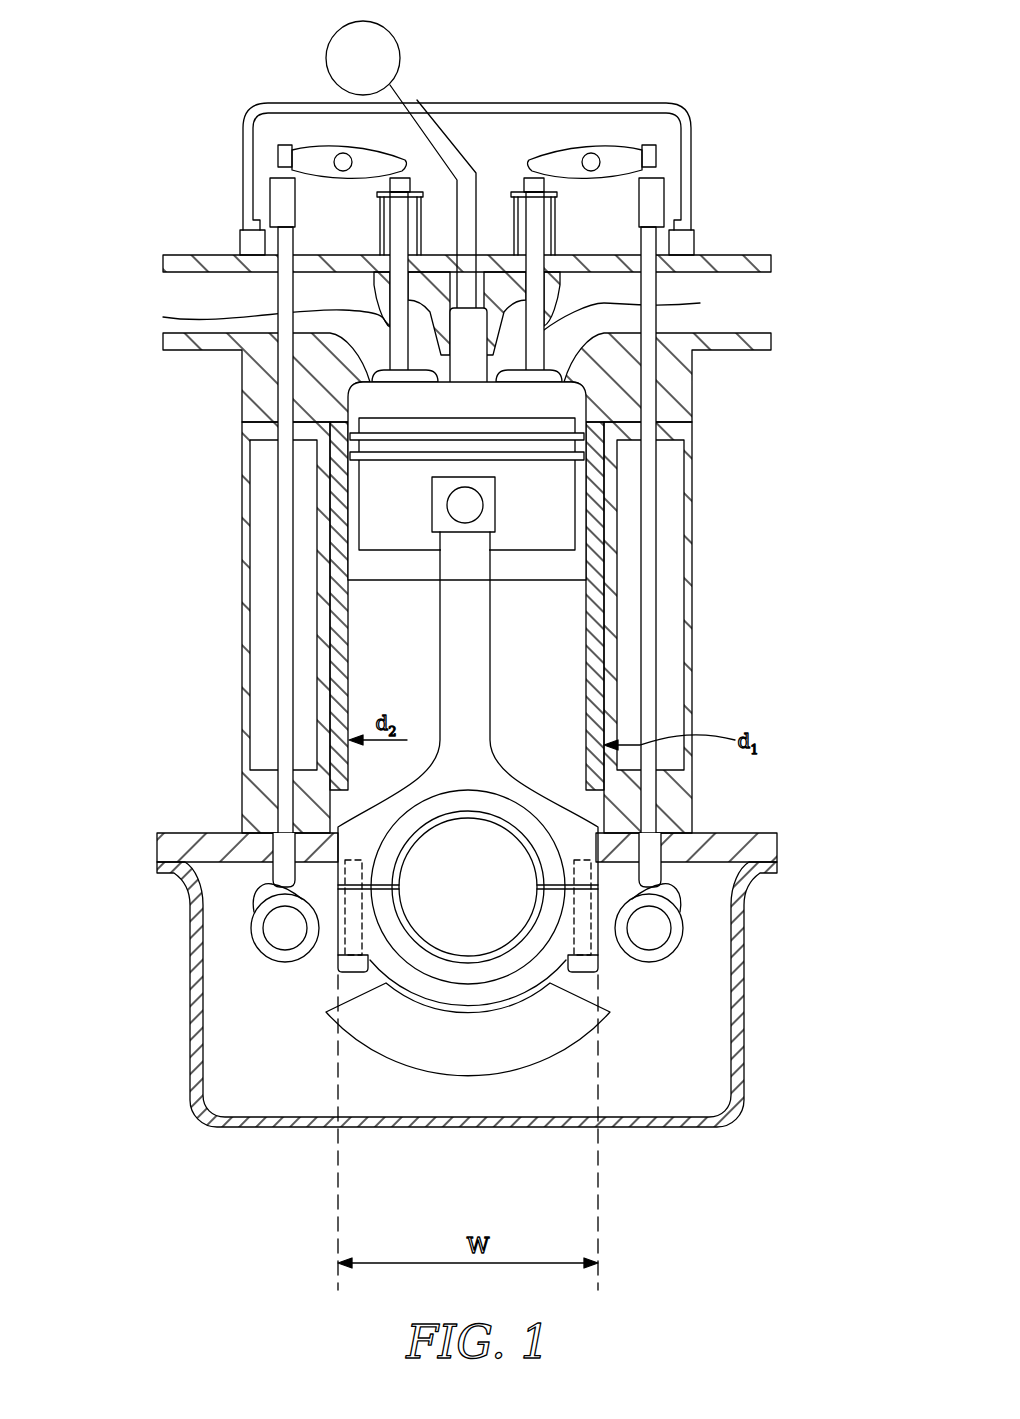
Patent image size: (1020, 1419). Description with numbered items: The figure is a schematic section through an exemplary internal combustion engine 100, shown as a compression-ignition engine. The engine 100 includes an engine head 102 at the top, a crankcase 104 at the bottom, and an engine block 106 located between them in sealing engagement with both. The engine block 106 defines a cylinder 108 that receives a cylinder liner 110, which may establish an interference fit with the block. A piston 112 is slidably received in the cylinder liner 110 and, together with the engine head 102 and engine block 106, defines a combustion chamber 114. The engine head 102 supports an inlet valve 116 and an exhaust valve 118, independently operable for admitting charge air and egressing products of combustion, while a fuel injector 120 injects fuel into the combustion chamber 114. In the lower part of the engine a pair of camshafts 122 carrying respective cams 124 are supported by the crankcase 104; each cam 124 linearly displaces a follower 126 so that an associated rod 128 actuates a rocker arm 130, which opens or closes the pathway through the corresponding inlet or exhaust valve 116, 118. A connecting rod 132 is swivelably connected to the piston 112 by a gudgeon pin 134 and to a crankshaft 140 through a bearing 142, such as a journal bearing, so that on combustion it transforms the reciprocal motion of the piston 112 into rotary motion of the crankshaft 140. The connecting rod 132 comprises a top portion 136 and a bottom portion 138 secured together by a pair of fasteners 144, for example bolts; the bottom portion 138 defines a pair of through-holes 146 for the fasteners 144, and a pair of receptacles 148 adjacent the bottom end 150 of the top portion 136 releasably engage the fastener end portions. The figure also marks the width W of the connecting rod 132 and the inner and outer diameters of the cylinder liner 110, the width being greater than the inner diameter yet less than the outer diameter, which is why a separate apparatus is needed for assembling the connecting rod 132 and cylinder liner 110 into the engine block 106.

The engine 100 is at (760, 72).
The engine head 102 is at (765, 342).
The crankcase 104 is at (190, 1002).
The engine block 106 is at (230, 683).
The cylinder 108 is at (388, 628).
The cylinder liner 110 is at (597, 550).
The piston 112 is at (560, 505).
The combustion chamber 114 is at (398, 401).
The inlet valve 116 is at (165, 317).
The exhaust valve 118 is at (700, 303).
The fuel injector 120 is at (483, 318).
The camshafts 122 is at (275, 932).
The cam 124 is at (262, 893).
The follower 126 is at (287, 862).
The rod 128 is at (277, 745).
The rocker arm 130 is at (318, 150).
The connecting rod 132 is at (492, 595).
The gudgeon pin 134 is at (457, 507).
The top portion 136 is at (583, 833).
The bottom portion 138 is at (492, 1080).
The crankshaft 140 is at (477, 930).
The bearing 142 is at (427, 950).
The fasteners 144 is at (590, 973).
The through-holes 146 is at (343, 940).
The receptacles 148 is at (337, 847).
The bottom end 150 is at (647, 960).